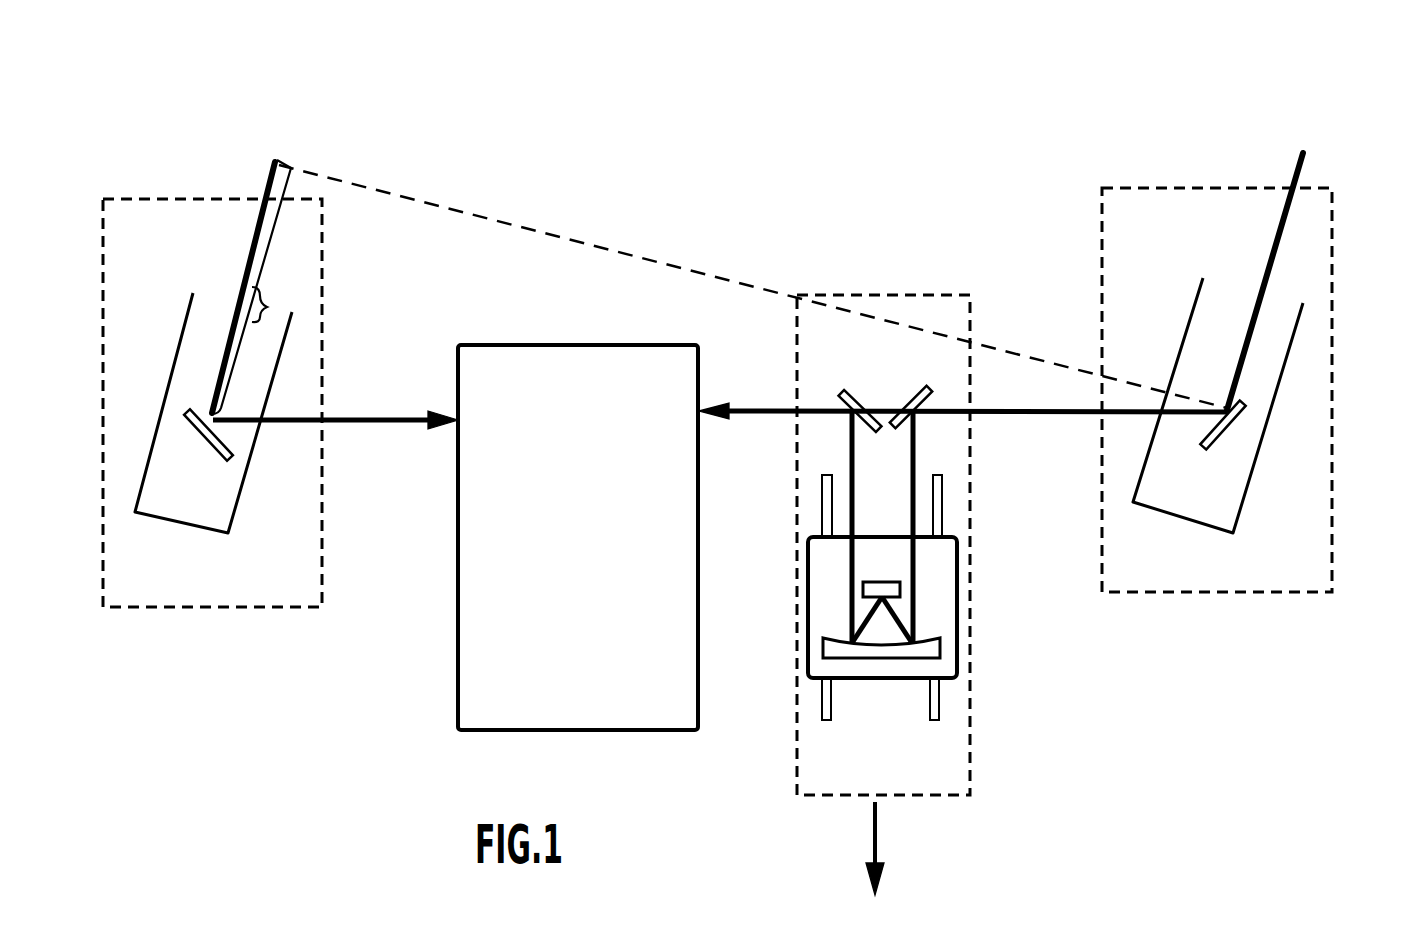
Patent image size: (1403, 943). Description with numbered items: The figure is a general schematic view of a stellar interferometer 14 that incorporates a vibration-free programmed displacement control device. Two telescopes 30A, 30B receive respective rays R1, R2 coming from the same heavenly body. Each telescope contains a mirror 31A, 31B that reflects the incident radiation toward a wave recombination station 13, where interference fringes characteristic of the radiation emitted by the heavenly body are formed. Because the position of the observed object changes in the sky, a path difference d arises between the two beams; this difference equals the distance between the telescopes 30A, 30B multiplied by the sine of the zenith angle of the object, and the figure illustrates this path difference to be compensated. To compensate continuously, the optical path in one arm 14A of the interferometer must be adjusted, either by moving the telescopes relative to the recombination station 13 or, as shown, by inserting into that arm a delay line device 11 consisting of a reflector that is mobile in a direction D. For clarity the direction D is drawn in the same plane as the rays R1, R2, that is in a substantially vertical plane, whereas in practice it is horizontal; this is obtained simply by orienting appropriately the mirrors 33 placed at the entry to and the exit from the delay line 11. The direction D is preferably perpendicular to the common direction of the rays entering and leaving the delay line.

The delay line device 11 is at (980, 732).
The wave recombination station 13 is at (542, 380).
The stellar interferometer 14 is at (862, 168).
The arm of the stellar interferometer 14A is at (1050, 428).
The telescope 30A is at (212, 615).
The telescope 30B is at (1178, 608).
The mirror 31A is at (215, 455).
The mirror 31B is at (1225, 445).
The mirrors 33 is at (893, 402).
The ray R1 is at (265, 183).
The ray R2 is at (1303, 170).
The path difference d is at (251, 287).
The direction of displacement D is at (882, 848).